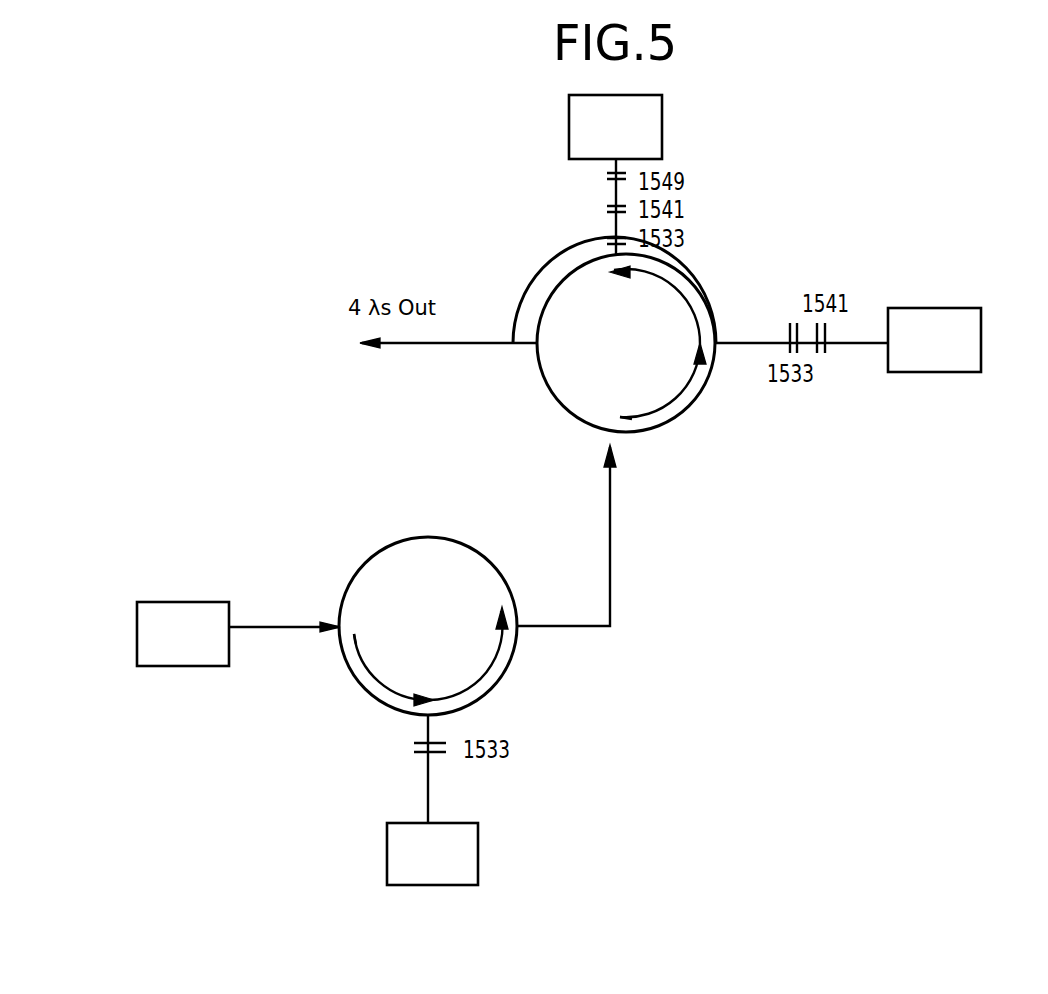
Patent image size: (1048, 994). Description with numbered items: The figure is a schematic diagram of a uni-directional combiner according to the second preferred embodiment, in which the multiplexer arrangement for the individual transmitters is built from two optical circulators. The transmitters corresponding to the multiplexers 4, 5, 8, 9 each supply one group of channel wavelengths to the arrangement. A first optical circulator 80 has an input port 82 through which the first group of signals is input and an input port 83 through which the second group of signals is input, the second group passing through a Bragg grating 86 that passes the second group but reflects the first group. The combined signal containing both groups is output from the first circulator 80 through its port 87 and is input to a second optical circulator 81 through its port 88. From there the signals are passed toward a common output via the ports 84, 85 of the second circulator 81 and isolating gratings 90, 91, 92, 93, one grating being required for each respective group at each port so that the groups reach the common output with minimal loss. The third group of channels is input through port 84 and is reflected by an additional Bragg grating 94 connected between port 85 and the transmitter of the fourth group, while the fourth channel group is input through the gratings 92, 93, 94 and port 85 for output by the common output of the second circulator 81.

The first multiplexer 4 is at (978, 345).
The second multiplexer 5 is at (658, 124).
The multiplexer 8 is at (205, 657).
The multiplexer 9 is at (476, 864).
The first optical circulator 80 is at (485, 688).
The second optical circulator 81 is at (685, 400).
The input port 82 is at (367, 622).
The input port 83 is at (429, 684).
The output port 87 is at (487, 614).
The input port 84 is at (686, 355).
The input port 85 is at (623, 289).
The input port 88 is at (626, 402).
The Bragg grating 86 is at (416, 747).
The isolating grating 90 is at (788, 335).
The isolating grating 91 is at (826, 353).
The isolating grating 92 is at (608, 240).
The isolating grating 93 is at (606, 208).
The additional Bragg grating 94 is at (606, 177).